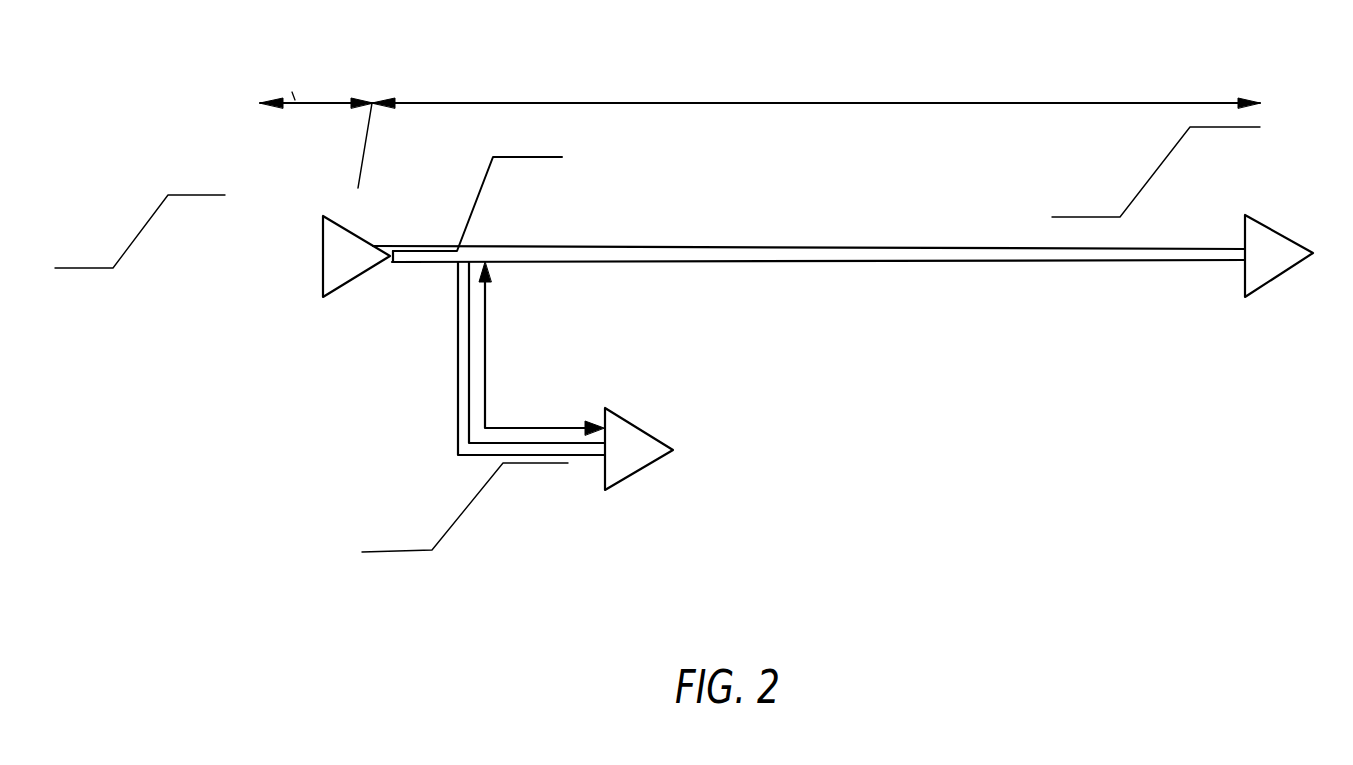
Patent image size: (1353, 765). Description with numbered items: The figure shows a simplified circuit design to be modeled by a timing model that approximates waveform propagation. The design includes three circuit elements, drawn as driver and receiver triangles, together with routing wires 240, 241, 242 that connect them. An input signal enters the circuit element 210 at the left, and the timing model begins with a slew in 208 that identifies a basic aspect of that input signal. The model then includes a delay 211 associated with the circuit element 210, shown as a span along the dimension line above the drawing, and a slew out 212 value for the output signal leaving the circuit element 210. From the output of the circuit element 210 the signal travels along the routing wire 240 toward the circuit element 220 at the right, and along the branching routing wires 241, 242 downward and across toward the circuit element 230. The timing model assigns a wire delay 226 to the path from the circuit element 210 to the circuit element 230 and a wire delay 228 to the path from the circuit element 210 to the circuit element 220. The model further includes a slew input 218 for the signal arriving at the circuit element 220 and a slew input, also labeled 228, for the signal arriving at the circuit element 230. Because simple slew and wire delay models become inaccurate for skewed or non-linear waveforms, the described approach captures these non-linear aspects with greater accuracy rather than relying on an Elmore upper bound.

The slew in 208 is at (75, 270).
The circuit element 210 is at (322, 256).
The delay 211 is at (327, 102).
The slew out 212 is at (490, 187).
The slew input 218 is at (1178, 148).
The circuit element 220 is at (1280, 272).
The wire delay 226 is at (490, 332).
The wire delay 228 is at (663, 102).
The circuit element 230 is at (643, 468).
The routing wire 240 is at (767, 249).
The routing wire 241 is at (410, 263).
The routing wire 242 is at (457, 413).